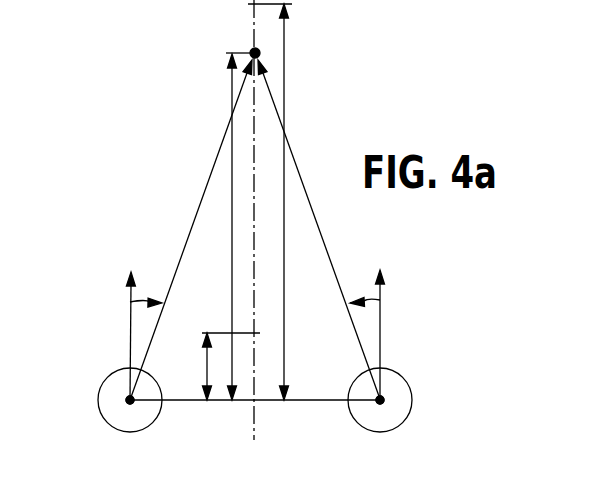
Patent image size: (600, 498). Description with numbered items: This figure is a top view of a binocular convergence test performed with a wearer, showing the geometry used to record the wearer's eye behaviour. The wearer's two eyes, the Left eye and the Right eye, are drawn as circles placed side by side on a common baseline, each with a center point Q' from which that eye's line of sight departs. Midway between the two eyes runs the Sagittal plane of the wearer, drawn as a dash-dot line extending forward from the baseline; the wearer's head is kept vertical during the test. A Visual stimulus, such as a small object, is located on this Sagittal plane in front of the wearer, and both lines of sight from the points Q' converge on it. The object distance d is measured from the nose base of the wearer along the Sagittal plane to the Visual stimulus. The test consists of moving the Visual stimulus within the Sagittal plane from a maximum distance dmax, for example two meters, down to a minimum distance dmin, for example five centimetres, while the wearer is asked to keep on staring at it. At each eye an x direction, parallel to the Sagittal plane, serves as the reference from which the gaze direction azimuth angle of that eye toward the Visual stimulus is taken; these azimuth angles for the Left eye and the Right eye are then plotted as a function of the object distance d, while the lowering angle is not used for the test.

The sagittal plane Sagittal plane is at (251, 33).
The visual stimulus Visual stimulus is at (259, 51).
The left eye Left eye is at (124, 431).
The right eye Right eye is at (390, 430).
The eye center point Q' is at (262, 409).
The x axis x is at (255, 327).
The maximum distance dmax is at (295, 202).
The object distance d is at (231, 226).
The minimum distance dmin is at (207, 366).